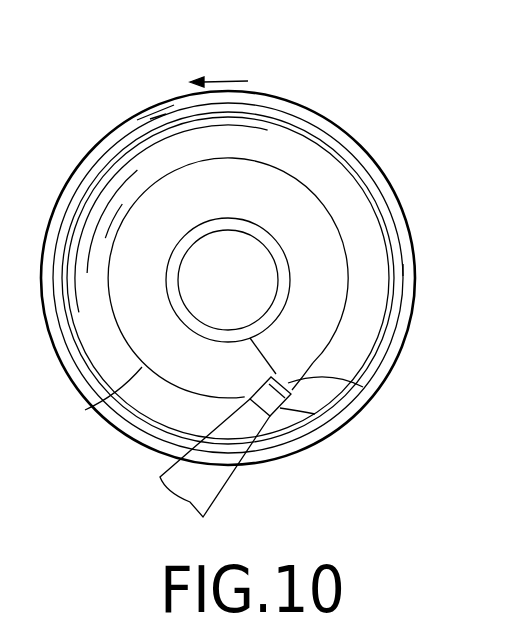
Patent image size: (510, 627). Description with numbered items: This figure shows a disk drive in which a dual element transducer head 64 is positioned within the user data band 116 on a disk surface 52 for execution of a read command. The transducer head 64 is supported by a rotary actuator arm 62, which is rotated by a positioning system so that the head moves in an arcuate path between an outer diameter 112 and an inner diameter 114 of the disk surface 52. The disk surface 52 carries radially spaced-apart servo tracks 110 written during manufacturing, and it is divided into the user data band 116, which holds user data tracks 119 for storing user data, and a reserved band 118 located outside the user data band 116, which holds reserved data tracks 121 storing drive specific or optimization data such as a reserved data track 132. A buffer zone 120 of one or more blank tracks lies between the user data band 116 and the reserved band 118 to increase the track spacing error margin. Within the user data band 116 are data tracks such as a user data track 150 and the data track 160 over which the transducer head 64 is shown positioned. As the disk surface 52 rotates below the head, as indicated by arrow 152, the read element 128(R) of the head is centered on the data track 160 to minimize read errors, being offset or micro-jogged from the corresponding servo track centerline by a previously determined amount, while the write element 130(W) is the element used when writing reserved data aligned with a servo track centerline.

The disk surface 52 is at (399, 57).
The rotary actuator arm 62 is at (187, 485).
The transducer head 64 is at (291, 358).
The servo tracks 110 is at (315, 414).
The outer diameter 112 is at (412, 230).
The inner diameter 114 is at (270, 260).
The user data band 116 is at (244, 202).
The reserved band 118 is at (407, 317).
The user data tracks 119 is at (88, 190).
The buffer zone 120 is at (372, 207).
The reserved data tracks 121 is at (150, 106).
The read element 128 is at (240, 405).
The write element 130 is at (363, 387).
The reserved data track 132 is at (403, 270).
The user data track 150 is at (307, 262).
The arrow 152 is at (221, 80).
The data track 160 is at (86, 409).